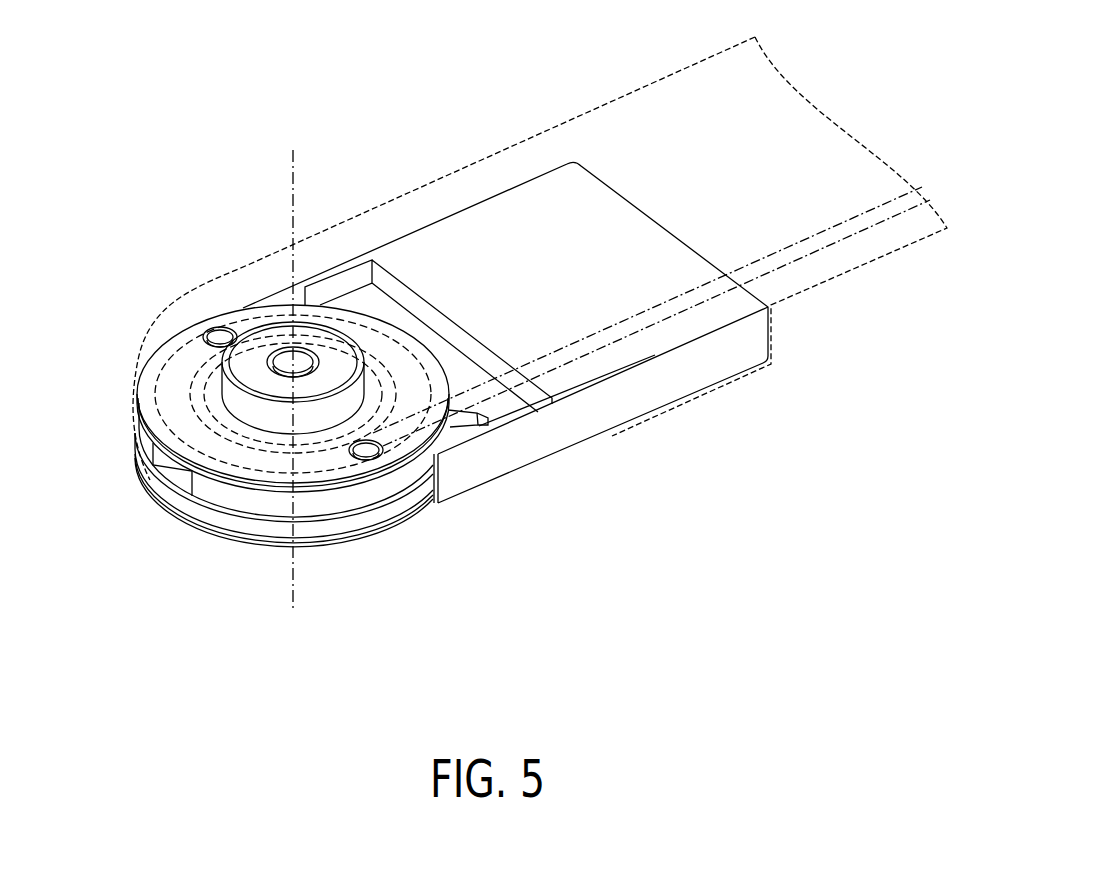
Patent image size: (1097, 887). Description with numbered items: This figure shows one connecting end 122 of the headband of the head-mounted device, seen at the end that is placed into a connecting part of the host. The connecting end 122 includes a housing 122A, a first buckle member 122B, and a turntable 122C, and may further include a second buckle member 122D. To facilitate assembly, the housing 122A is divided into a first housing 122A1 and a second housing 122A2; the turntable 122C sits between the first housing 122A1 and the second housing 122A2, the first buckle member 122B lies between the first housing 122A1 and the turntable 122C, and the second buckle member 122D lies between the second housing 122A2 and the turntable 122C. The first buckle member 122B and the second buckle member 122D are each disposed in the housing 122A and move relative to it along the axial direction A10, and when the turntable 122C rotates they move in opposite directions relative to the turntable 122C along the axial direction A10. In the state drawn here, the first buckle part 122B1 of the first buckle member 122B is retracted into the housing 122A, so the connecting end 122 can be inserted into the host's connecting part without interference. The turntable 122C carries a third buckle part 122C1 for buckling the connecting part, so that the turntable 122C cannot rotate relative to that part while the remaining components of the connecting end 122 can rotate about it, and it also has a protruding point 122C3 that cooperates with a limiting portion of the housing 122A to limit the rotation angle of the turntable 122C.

The connecting end 122 is at (499, 305).
The housing 122A is at (540, 276).
The first housing 122A1 is at (458, 84).
The second housing 122A2 is at (553, 165).
The first buckle member 122B is at (250, 369).
The first buckle part 122B1 is at (258, 345).
The turntable 122C is at (347, 487).
The third buckle part 122C1 is at (187, 472).
The protruding point 122C3 is at (484, 413).
The second buckle member 122D is at (340, 520).
The axial direction A10 is at (294, 363).